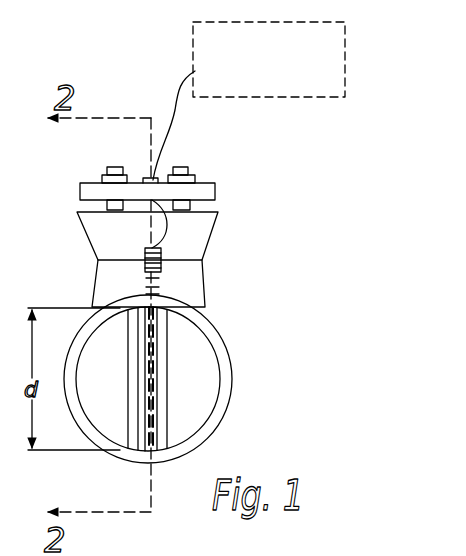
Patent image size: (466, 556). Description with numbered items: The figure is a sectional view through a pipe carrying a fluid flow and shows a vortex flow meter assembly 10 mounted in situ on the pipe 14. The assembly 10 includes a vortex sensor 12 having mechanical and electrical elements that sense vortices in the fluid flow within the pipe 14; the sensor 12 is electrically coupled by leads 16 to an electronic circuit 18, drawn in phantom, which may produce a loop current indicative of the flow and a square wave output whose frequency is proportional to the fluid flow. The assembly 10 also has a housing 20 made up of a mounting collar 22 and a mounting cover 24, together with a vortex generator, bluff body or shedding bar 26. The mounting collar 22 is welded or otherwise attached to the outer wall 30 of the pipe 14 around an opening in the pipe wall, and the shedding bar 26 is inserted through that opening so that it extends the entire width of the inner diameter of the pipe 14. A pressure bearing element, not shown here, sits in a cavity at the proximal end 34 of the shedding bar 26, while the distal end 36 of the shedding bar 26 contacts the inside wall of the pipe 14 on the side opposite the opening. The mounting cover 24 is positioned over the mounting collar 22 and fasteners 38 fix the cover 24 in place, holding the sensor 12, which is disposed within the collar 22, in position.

The vortex flow meter assembly 10 is at (294, 252).
The vortex sensor 12 is at (161, 250).
The pipe 14 is at (233, 376).
The leads 16 is at (163, 234).
The electronic circuit 18 is at (346, 44).
The housing 20 is at (80, 238).
The mounting collar 22 is at (90, 275).
The mounting cover 24 is at (80, 191).
The shedding bar 26 is at (132, 377).
The outer wall 30 is at (218, 319).
The proximal end 34 is at (177, 326).
The distal end 36 is at (174, 427).
The fasteners 38 is at (116, 167).